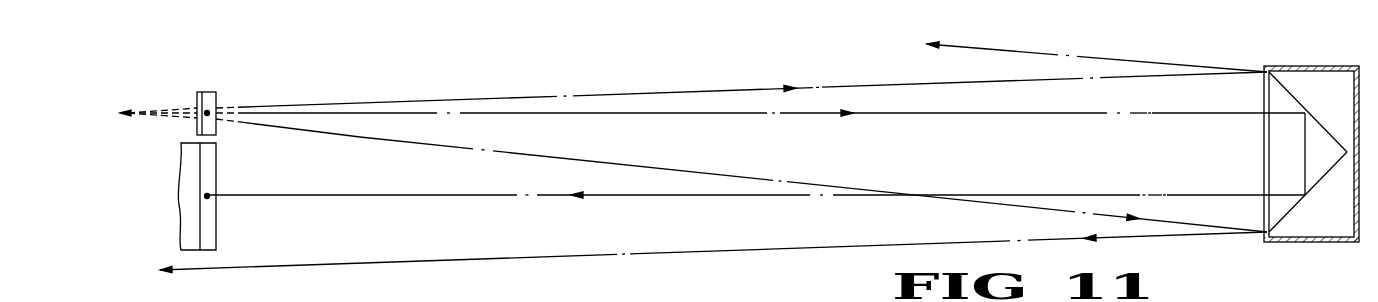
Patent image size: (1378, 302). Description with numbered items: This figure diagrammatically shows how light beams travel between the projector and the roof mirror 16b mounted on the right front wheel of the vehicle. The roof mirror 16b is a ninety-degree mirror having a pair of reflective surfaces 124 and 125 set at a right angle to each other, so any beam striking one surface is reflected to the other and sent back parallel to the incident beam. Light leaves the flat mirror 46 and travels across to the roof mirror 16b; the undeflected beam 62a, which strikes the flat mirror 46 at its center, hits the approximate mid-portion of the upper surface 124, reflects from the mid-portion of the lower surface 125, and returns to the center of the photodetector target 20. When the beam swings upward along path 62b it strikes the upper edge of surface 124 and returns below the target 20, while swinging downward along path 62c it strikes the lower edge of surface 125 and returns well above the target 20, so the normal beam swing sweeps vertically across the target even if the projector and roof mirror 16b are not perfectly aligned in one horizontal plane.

The flat mirror 46 is at (209, 92).
The photodetector target 20 is at (180, 158).
The undeflected beam 62a is at (1106, 114).
The upward beam path 62b is at (658, 92).
The downward beam path 62c is at (644, 165).
The upper reflective surface 124 is at (1283, 88).
The lower reflective surface 125 is at (1290, 209).
The roof mirror 16b is at (1323, 242).